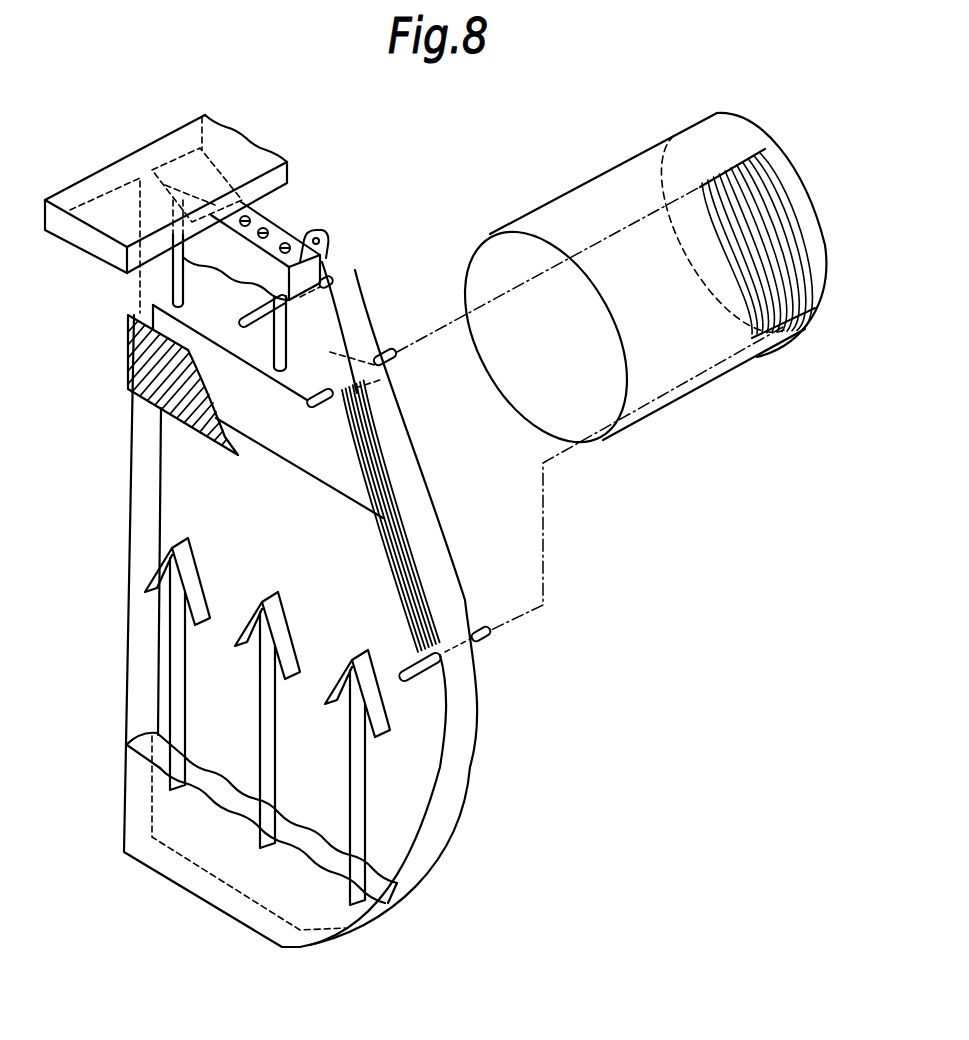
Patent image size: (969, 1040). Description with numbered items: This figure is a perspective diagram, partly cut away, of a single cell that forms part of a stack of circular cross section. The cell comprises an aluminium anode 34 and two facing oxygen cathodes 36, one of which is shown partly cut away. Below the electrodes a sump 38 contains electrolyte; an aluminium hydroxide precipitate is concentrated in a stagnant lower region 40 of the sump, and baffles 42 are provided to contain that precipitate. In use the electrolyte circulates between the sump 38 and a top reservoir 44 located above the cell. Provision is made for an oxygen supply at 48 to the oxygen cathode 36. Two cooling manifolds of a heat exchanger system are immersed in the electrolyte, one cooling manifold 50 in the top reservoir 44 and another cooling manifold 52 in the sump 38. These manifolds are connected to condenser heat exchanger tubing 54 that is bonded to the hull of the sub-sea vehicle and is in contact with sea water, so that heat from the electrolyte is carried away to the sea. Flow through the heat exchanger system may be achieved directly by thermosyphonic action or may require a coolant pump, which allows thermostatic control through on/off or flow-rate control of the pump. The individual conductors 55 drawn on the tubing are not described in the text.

The aluminium anode 34 is at (298, 453).
The oxygen cathode 36 is at (145, 370).
The sump 38 is at (298, 553).
The stagnant lower region 40 is at (163, 817).
The baffles 42 is at (168, 680).
The top reservoir 44 is at (170, 296).
The oxygen supply 48 is at (325, 273).
The cooling manifold 50 is at (393, 347).
The cooling manifold 52 is at (492, 640).
The condenser heat exchanger tubing 54 is at (745, 150).
The flat conductors 55 is at (783, 246).